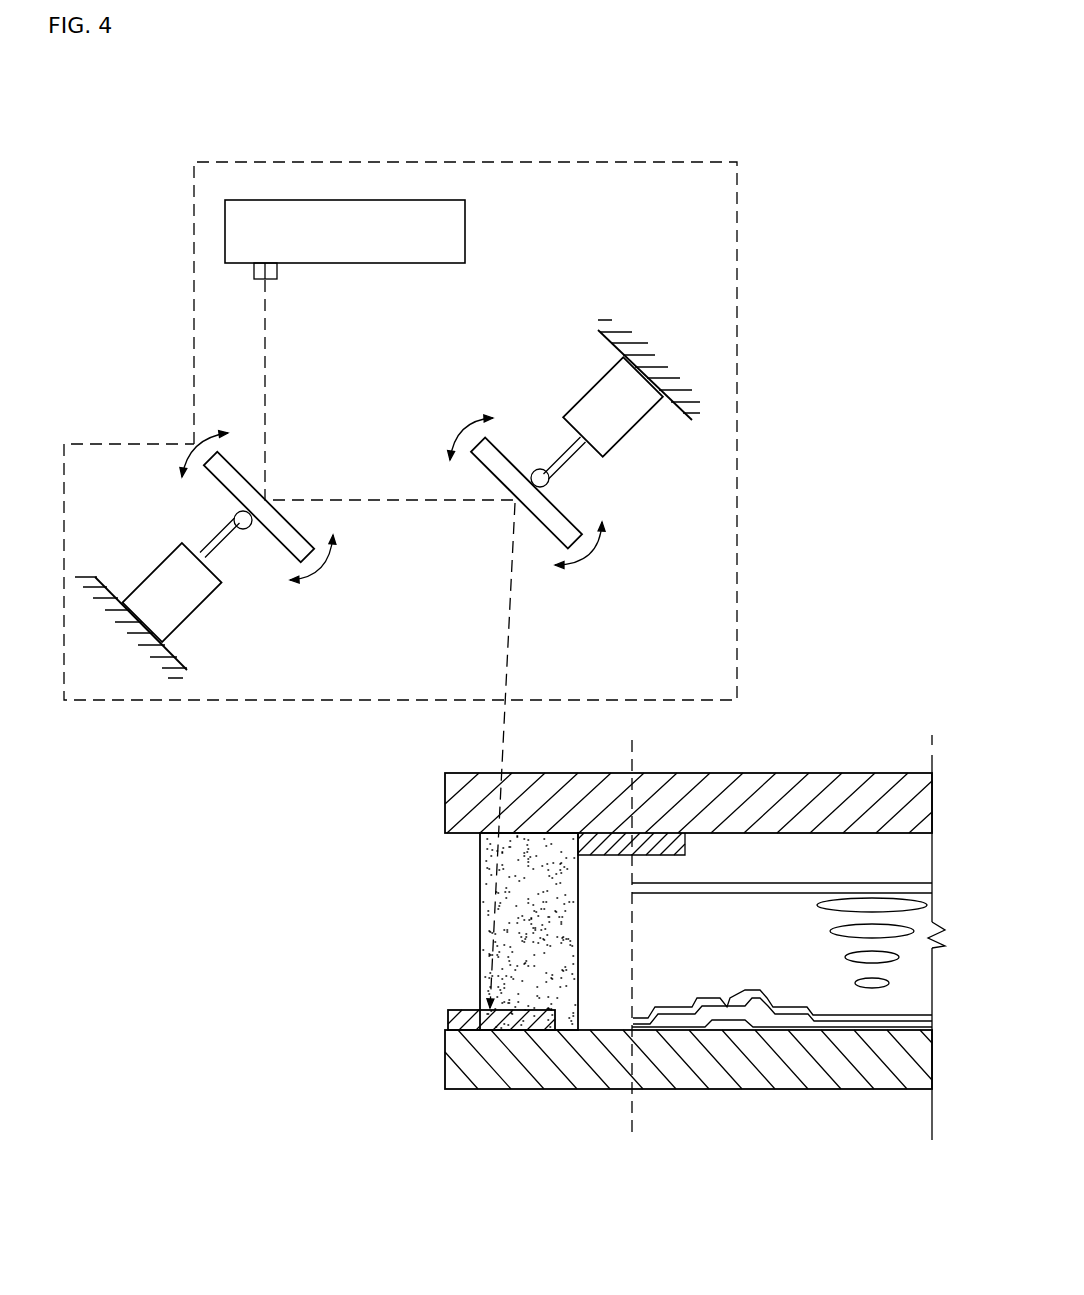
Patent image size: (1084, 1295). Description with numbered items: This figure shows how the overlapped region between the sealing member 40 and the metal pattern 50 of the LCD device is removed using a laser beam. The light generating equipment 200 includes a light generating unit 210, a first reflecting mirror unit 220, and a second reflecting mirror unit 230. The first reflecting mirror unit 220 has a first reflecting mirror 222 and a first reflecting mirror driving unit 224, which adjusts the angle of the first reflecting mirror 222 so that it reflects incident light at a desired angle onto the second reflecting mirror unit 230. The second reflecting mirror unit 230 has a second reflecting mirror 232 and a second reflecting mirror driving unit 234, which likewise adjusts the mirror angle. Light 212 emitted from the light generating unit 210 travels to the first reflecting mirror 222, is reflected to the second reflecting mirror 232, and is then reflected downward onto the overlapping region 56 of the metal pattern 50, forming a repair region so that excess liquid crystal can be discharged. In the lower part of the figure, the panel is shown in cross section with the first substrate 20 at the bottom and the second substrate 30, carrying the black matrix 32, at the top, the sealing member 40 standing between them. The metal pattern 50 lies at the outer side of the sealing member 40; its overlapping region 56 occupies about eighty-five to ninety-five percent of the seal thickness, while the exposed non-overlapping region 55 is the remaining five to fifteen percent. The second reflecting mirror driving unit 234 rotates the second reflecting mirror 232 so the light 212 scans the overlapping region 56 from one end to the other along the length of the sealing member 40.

The light generating equipment 200 is at (737, 343).
The light generating unit 210 is at (330, 200).
The light 212 is at (265, 355).
The first reflecting mirror unit 220 is at (205, 611).
The first reflecting mirror 222 is at (278, 535).
The first reflecting mirror driving unit 224 is at (180, 615).
The second reflecting mirror unit 230 is at (656, 444).
The second reflecting mirror 232 is at (565, 513).
The second reflecting mirror driving unit 234 is at (642, 422).
The second substrate 30 is at (843, 785).
The black matrix 32 is at (660, 852).
The sealing member 40 is at (488, 873).
The metal pattern 50 is at (473, 1037).
The non-overlapping region 55 is at (458, 1030).
The overlapping region 56 is at (515, 1023).
The first substrate 20 is at (772, 1085).